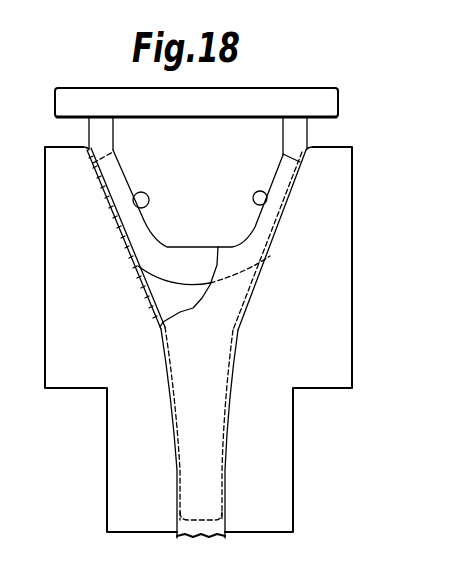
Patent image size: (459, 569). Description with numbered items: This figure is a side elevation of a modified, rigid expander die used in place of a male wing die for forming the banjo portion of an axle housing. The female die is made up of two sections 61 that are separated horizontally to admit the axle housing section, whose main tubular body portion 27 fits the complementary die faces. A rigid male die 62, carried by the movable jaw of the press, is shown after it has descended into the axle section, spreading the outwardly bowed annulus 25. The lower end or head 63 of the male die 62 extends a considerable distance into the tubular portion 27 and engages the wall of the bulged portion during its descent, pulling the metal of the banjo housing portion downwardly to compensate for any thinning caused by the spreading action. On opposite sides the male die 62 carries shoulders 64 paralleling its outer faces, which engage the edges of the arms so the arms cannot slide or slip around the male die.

The female die sections 61 is at (327, 293).
The male die 62 is at (173, 300).
The outwardly bowed annulus 25 is at (227, 300).
The body portion of the tube 27 is at (207, 447).
The head of the male die 63 is at (200, 507).
The shoulders 64 is at (135, 208).